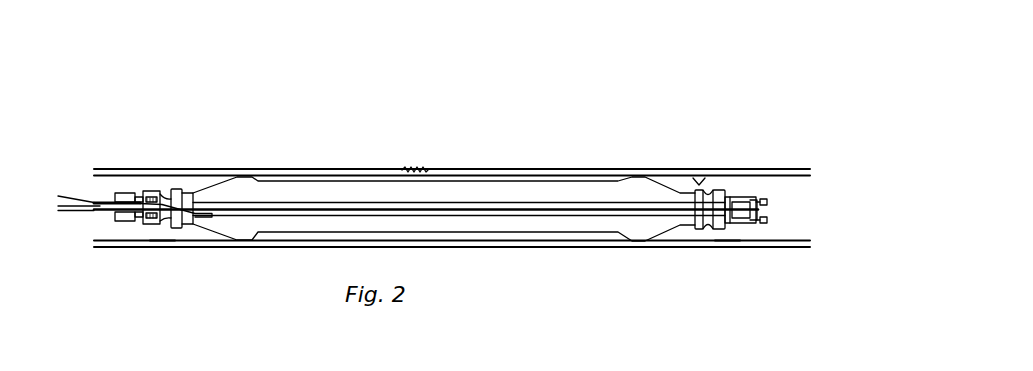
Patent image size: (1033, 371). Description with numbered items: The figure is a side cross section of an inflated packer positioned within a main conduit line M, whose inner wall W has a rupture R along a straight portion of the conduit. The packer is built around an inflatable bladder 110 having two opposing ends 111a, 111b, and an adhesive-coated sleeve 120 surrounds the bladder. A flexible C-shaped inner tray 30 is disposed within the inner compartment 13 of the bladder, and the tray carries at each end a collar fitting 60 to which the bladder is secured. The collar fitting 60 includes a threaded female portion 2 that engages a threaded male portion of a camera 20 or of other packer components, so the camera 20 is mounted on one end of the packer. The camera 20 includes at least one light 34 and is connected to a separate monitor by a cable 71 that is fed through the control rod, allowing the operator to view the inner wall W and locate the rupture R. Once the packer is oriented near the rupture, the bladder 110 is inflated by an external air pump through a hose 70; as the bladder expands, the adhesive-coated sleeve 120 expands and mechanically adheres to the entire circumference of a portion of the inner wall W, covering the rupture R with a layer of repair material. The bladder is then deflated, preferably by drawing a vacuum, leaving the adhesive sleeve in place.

The threaded female portion 2 is at (150, 192).
The inner compartment 13 is at (343, 192).
The camera 20 is at (742, 204).
The inner tray 30 is at (498, 218).
The light 34 is at (768, 202).
The collar fitting 60 is at (174, 189).
The hose 70 is at (90, 207).
The cable 71 is at (78, 200).
The inflatable bladder 110 is at (650, 177).
The bladder end 111a is at (157, 252).
The bladder end 111b is at (727, 258).
The adhesive-coated sleeve 120 is at (292, 180).
The main conduit line M is at (532, 168).
The rupture R is at (415, 170).
The inner wall W is at (699, 184).